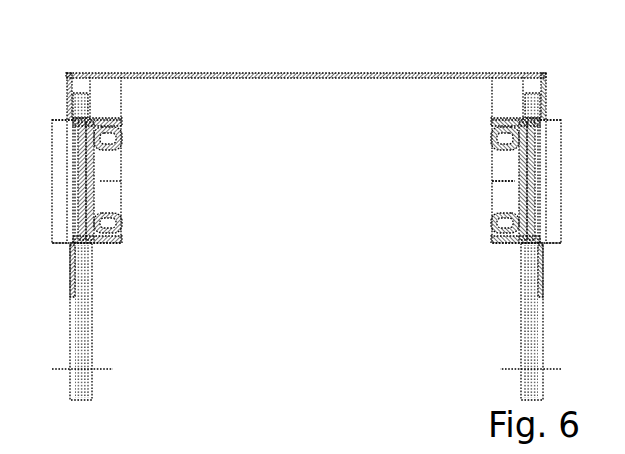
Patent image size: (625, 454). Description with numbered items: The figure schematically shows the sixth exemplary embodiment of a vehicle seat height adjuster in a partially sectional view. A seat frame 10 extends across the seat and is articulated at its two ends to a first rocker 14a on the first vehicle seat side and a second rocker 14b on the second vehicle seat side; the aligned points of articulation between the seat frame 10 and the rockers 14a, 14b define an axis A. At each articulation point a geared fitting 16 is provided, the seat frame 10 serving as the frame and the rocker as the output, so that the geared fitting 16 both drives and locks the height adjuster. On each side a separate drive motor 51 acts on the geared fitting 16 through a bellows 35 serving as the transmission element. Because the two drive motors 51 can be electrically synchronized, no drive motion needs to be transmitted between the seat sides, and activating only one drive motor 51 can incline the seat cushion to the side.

The seat frame 10 is at (317, 75).
The drive motors 51 is at (57, 128).
The geared fitting 16 is at (108, 156).
The bellows 35 is at (123, 121).
The first rocker 14a is at (530, 327).
The second rocker 14b is at (83, 317).
The axis A is at (492, 183).